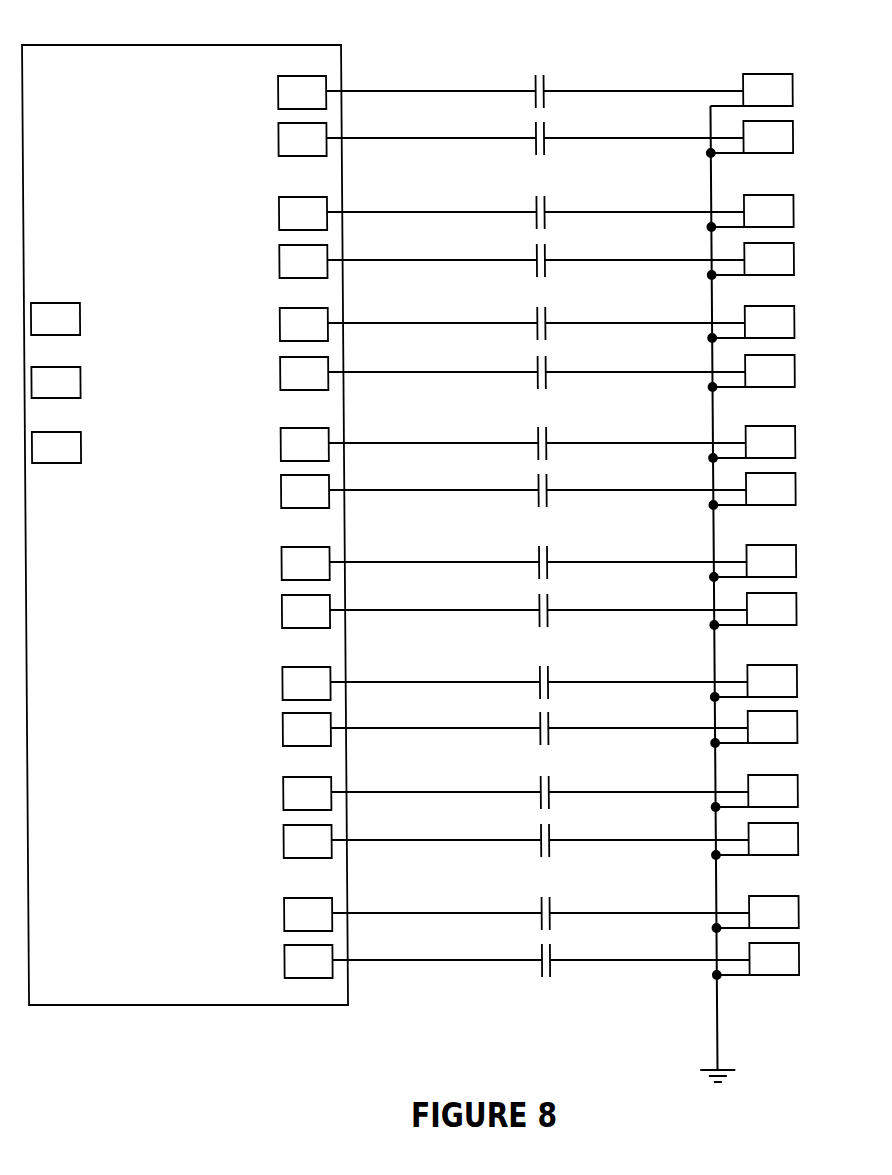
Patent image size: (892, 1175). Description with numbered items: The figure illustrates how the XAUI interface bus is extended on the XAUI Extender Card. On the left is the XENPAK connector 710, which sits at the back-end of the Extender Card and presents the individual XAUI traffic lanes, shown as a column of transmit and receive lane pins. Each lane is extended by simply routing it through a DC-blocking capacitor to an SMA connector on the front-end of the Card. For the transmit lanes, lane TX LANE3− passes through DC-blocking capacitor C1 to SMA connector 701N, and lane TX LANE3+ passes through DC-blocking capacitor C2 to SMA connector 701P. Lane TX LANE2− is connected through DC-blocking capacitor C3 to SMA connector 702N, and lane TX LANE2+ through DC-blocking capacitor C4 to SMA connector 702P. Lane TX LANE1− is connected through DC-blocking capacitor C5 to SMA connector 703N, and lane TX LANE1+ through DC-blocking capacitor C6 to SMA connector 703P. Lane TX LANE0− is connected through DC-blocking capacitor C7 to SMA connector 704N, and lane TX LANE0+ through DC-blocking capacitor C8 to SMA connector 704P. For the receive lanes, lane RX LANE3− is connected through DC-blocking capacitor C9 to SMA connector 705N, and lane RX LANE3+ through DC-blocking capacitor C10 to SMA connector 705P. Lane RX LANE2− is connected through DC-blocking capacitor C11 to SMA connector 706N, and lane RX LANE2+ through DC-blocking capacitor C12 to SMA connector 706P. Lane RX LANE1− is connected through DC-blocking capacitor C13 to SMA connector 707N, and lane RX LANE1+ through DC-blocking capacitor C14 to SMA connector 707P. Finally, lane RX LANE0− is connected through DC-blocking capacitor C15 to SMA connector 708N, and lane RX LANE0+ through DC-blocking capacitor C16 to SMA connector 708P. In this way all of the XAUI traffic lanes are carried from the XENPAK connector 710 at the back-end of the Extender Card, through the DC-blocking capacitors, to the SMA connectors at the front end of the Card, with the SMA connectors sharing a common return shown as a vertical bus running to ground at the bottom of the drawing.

The XENPAK connector 710 is at (180, 43).
The SMA connector 701N is at (751, 90).
The SMA connector 701P is at (750, 139).
The SMA connector 702N is at (750, 213).
The SMA connector 702P is at (750, 261).
The SMA connector 703N is at (751, 324).
The SMA connector 703P is at (751, 373).
The SMA connector 704N is at (752, 444).
The SMA connector 704P is at (752, 491).
The SMA connector 705N is at (753, 563).
The SMA connector 705P is at (753, 611).
The SMA connector 706N is at (754, 683).
The SMA connector 706P is at (754, 729).
The SMA connector 707N is at (754, 793).
The SMA connector 707P is at (755, 841).
The SMA connector 708N is at (755, 914).
The SMA connector 708P is at (756, 961).
The DC-blocking capacitor C1 is at (534, 88).
The DC-blocking capacitor C2 is at (534, 135).
The DC-blocking capacitor C3 is at (535, 209).
The DC-blocking capacitor C4 is at (535, 257).
The DC-blocking capacitor C5 is at (536, 320).
The DC-blocking capacitor C6 is at (536, 369).
The DC-blocking capacitor C7 is at (537, 440).
The DC-blocking capacitor C8 is at (537, 487).
The DC-blocking capacitor C9 is at (537, 559).
The DC-blocking capacitor C10 is at (538, 607).
The DC-blocking capacitor C11 is at (538, 679).
The DC-blocking capacitor C12 is at (539, 725).
The DC-blocking capacitor C13 is at (539, 789).
The DC-blocking capacitor C14 is at (539, 837).
The DC-blocking capacitor C15 is at (540, 910).
The DC-blocking capacitor C16 is at (540, 957).